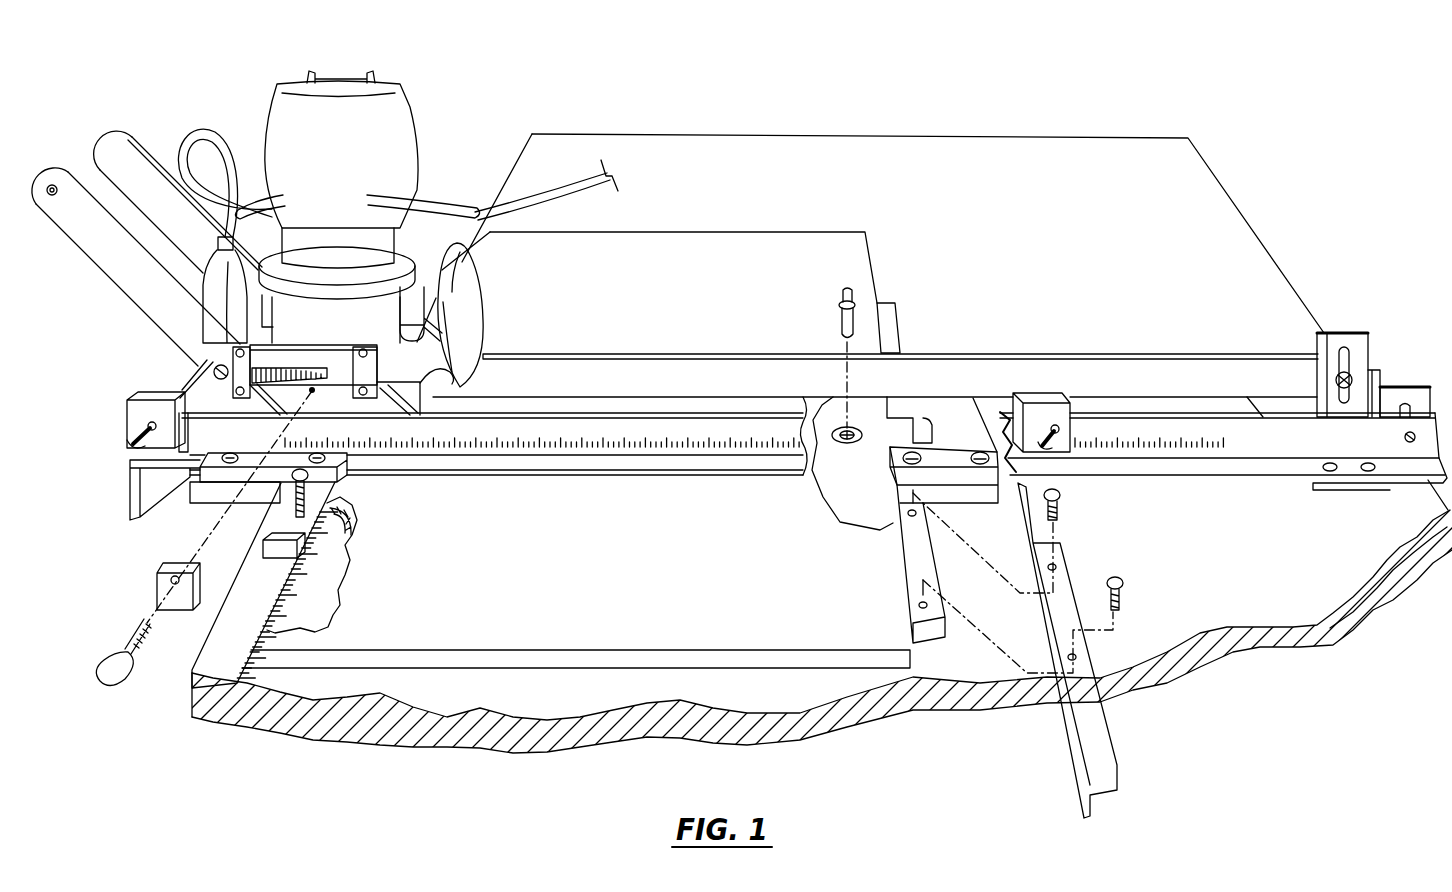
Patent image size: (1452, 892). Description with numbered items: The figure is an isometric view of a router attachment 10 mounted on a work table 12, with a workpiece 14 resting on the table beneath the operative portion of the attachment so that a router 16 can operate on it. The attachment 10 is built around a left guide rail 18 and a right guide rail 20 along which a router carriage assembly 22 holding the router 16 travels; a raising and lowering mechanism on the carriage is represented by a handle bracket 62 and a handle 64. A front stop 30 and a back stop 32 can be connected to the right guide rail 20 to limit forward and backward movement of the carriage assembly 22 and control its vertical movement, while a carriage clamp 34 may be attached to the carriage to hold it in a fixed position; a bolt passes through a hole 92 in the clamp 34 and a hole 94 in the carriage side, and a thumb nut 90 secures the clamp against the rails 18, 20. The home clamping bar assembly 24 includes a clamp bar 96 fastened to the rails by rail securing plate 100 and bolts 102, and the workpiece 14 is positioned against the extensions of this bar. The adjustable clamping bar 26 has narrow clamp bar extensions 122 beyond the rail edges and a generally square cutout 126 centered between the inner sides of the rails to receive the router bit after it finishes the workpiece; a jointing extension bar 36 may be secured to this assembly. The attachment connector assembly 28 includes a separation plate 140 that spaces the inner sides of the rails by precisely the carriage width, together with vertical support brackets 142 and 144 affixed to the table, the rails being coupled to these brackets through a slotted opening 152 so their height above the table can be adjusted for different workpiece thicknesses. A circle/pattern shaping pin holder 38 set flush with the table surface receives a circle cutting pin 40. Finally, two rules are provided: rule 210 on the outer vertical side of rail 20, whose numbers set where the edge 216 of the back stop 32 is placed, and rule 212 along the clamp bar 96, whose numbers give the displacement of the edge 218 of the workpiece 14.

The router attachment 10 is at (749, 360).
The work table 12 is at (1016, 147).
The workpiece 14 is at (843, 240).
The router 16 is at (390, 105).
The left guide rail 18 is at (1073, 360).
The right guide rail 20 is at (749, 453).
The router carriage assembly 22 is at (412, 373).
The home clamping bar assembly 24 is at (123, 507).
The adjustable clamping bar 26 is at (928, 459).
The attachment connector assembly 28 is at (1384, 359).
The front stop 30 is at (1048, 398).
The back stop 32 is at (148, 392).
The carriage clamp 34 is at (157, 581).
The jointing extension bar 36 is at (1065, 587).
The circle/pattern shaping pin holder 38 is at (847, 444).
The circle cutting pin 40 is at (839, 324).
The handle bracket 62 is at (143, 157).
The handle 64 is at (88, 156).
The thumb nut 90 is at (100, 659).
The hole 92 is at (172, 583).
The hole 94 is at (314, 393).
The clamp bar 96 is at (411, 324).
The rail securing plate 100 is at (270, 458).
The bolts 102 is at (228, 455).
The narrow clamp bar extension 122 is at (888, 303).
The cutout portion 126 is at (932, 413).
The separation plate 140 is at (1277, 407).
The vertical support bracket 142 is at (1327, 340).
The vertical support bracket 144 is at (1413, 387).
The slotted opening 152 is at (1347, 352).
The rule 210 is at (597, 440).
The rule 212 is at (333, 555).
The edge 216 is at (178, 430).
The edge 218 is at (497, 660).